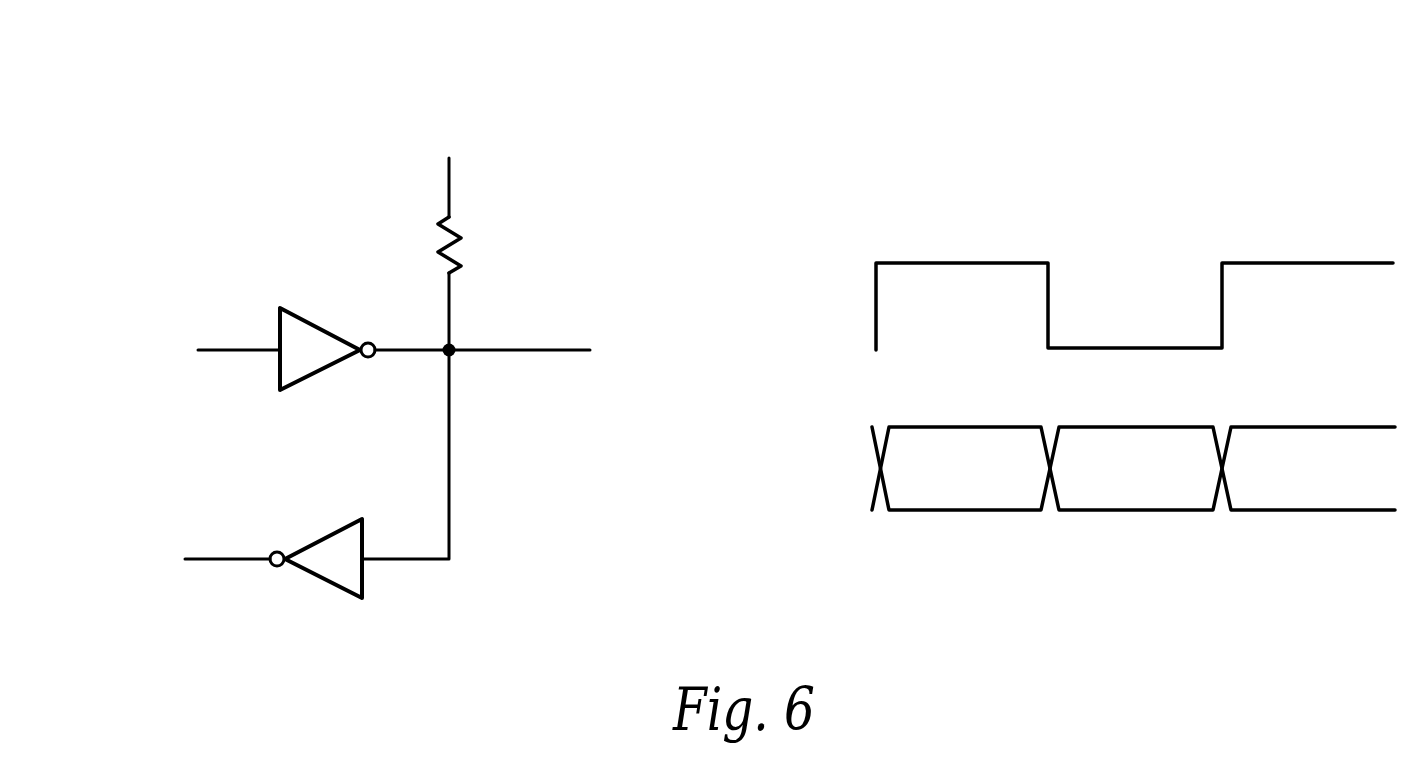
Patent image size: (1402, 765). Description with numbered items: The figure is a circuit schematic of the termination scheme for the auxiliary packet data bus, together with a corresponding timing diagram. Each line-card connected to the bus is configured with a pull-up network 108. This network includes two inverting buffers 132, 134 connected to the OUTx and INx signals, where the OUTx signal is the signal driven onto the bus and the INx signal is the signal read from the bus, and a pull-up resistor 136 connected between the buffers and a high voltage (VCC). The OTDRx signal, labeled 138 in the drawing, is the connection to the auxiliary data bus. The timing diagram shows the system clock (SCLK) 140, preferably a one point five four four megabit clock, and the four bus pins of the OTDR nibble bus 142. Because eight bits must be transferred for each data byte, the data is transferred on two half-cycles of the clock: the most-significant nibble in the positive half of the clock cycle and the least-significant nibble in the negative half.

The pull-up network 108 is at (250, 133).
The inverting buffer 132 is at (279, 330).
The inverting buffer 134 is at (322, 583).
The pull-up resistor 136 is at (437, 245).
The OTDRx bidirectional line 138 is at (562, 305).
The system clock (SCLK) 140 is at (1316, 262).
The OTDR[3:0] 142 is at (1318, 511).